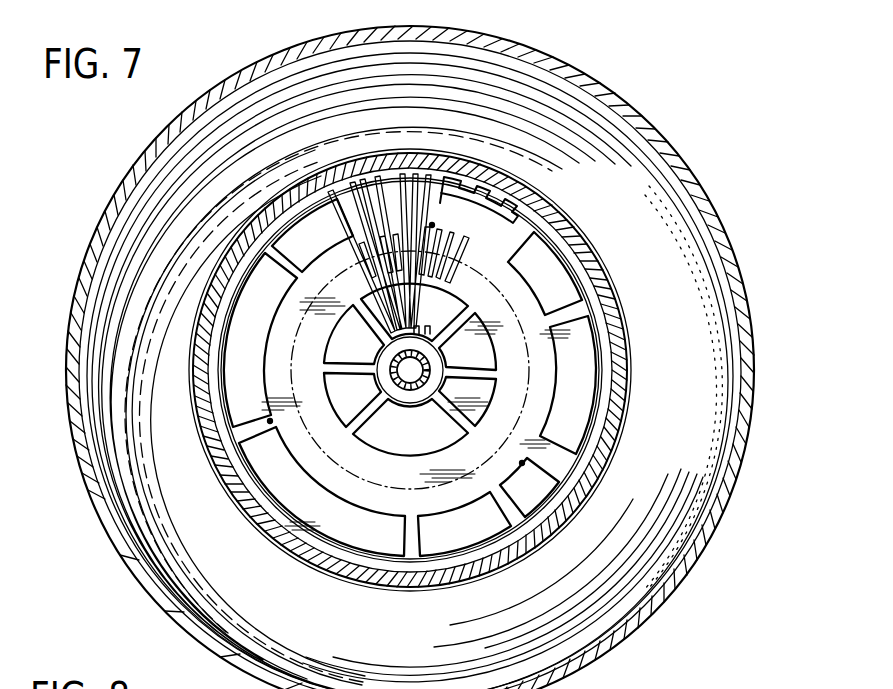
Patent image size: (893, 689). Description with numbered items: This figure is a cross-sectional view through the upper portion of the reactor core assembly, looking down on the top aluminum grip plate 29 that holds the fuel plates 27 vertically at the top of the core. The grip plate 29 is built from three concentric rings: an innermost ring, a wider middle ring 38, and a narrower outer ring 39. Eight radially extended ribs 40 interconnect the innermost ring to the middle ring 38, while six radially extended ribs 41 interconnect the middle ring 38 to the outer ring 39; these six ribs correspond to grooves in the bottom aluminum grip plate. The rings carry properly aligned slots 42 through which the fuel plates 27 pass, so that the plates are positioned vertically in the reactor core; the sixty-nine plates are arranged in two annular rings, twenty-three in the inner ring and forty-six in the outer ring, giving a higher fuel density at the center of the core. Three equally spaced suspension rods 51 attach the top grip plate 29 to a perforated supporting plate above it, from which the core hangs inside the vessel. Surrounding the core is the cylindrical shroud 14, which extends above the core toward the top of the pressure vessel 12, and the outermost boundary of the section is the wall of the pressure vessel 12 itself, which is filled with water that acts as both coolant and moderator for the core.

The pressure vessel 12 is at (700, 194).
The cylindrical shroud 14 is at (624, 322).
The fuel plates 27 is at (362, 228).
The top aluminum grip plate 29 is at (330, 505).
The middle ring 38 is at (543, 363).
The outer ring 39 is at (603, 380).
The radially extended ribs 40 is at (415, 303).
The radially extended ribs 41 is at (290, 272).
The slots 42 is at (466, 250).
The suspension rods 51 is at (435, 224).